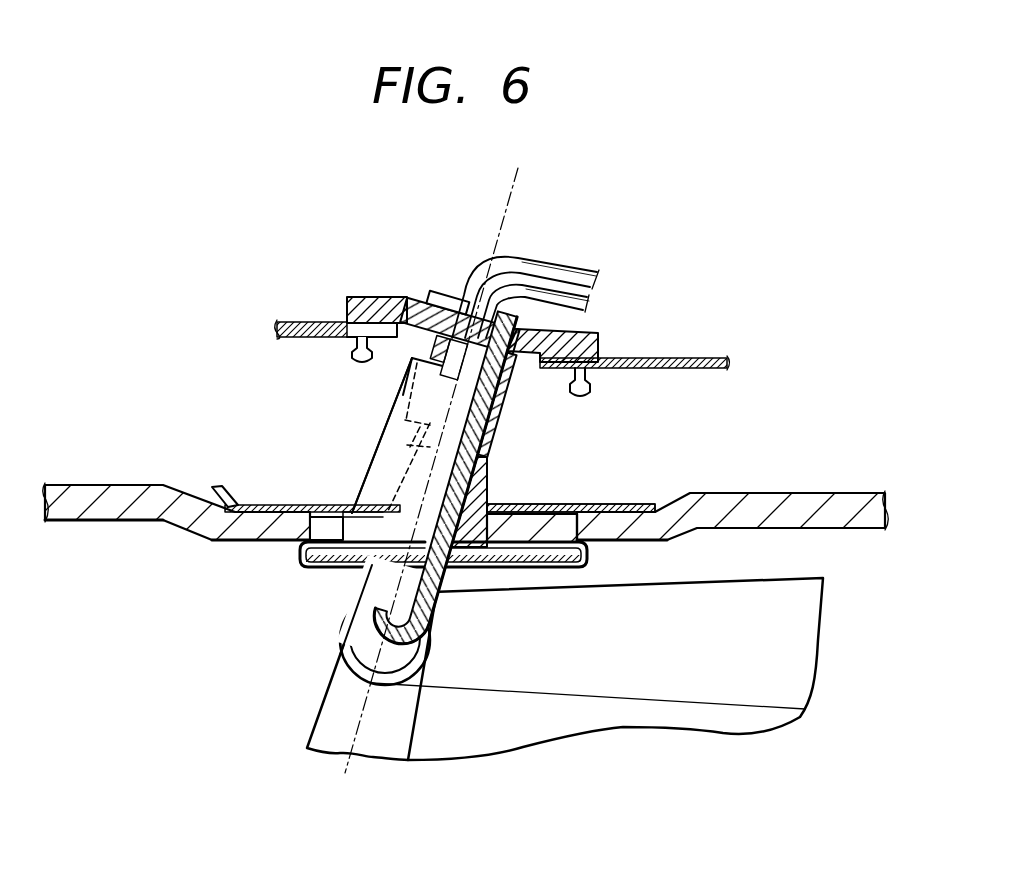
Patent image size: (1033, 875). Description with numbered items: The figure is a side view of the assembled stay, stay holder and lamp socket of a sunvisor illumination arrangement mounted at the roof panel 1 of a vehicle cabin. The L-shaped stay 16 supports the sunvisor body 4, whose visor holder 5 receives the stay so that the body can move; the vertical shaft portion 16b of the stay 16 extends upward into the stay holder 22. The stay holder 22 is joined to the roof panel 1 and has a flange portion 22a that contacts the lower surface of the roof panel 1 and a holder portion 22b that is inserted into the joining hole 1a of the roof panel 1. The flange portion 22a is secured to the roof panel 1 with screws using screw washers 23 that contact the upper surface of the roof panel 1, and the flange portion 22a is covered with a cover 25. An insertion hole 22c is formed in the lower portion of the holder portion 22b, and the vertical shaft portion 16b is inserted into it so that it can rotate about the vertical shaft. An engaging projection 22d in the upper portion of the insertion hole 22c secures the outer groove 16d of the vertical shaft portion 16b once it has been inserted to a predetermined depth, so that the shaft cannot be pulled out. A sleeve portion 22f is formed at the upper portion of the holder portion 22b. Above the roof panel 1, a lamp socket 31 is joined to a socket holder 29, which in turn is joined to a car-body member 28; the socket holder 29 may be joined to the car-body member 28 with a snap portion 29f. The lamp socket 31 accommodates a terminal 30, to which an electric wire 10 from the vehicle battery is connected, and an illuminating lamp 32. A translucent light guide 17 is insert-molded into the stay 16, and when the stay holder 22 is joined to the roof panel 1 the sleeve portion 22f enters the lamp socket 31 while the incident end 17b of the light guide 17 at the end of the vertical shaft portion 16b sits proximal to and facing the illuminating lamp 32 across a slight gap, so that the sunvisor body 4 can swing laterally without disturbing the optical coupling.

The roof panel 1 is at (107, 513).
The joining hole 1a is at (557, 513).
The sunvisor body 4 is at (562, 715).
The visor holder 5 is at (330, 714).
The electric wire 10 is at (560, 303).
The stay 16 is at (433, 603).
The vertical shaft portion 16b is at (380, 582).
The outer groove 16d is at (495, 460).
The light guide 17 is at (453, 483).
The incident end 17b is at (493, 425).
The stay holder 22 is at (370, 497).
The flange portion 22a is at (280, 540).
The holder portion 22b is at (403, 407).
The insertion hole 22c is at (437, 593).
The engaging projection 22d is at (571, 508).
The sleeve portion 22f is at (403, 395).
The screw washer 23 is at (258, 500).
The cover 25 is at (540, 565).
The car-body member 28 is at (690, 357).
The socket holder 29 is at (613, 347).
The snap portion 29f is at (363, 358).
The terminal 30 is at (572, 337).
The lamp socket 31 is at (443, 347).
The illuminating lamp 32 is at (427, 347).